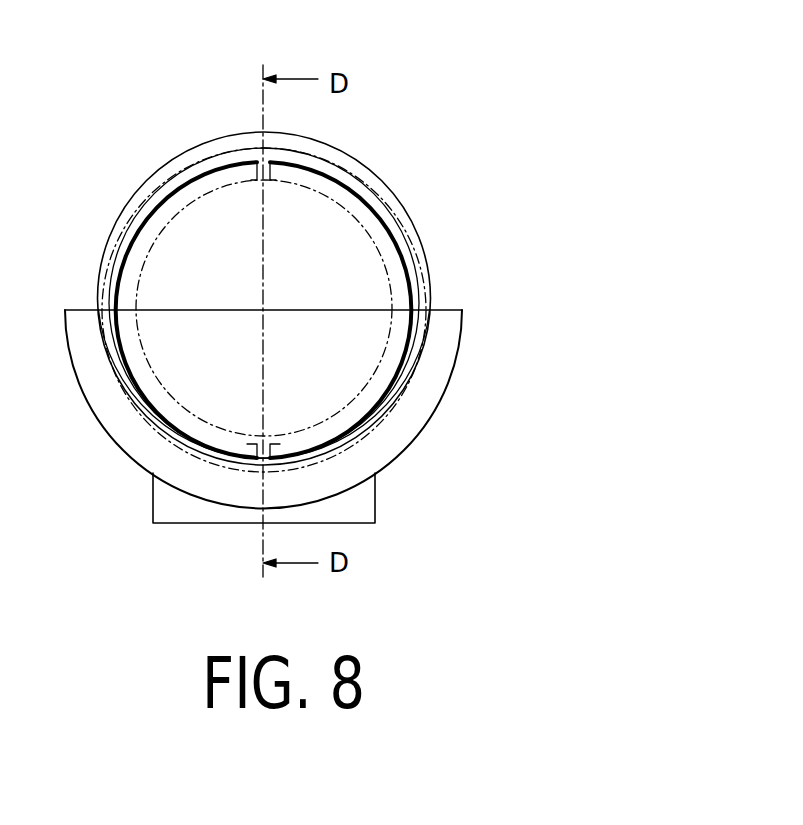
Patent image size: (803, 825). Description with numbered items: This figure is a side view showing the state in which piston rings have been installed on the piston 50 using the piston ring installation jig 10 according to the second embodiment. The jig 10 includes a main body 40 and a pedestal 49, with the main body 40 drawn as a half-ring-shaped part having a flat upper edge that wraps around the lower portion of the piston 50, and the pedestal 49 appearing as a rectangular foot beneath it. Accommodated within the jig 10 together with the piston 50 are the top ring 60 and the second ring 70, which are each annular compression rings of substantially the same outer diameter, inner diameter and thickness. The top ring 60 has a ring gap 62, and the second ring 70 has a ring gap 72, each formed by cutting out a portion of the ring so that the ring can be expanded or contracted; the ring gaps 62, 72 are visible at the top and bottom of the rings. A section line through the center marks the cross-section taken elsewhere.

The piston ring installation jig 10 is at (476, 341).
The main body 40 is at (82, 390).
The pedestal 49 is at (153, 505).
The piston 50 is at (328, 174).
The top ring 60 is at (377, 233).
The ring gap 62 is at (270, 181).
The second ring 70 is at (163, 160).
The ring gap 72 is at (268, 442).